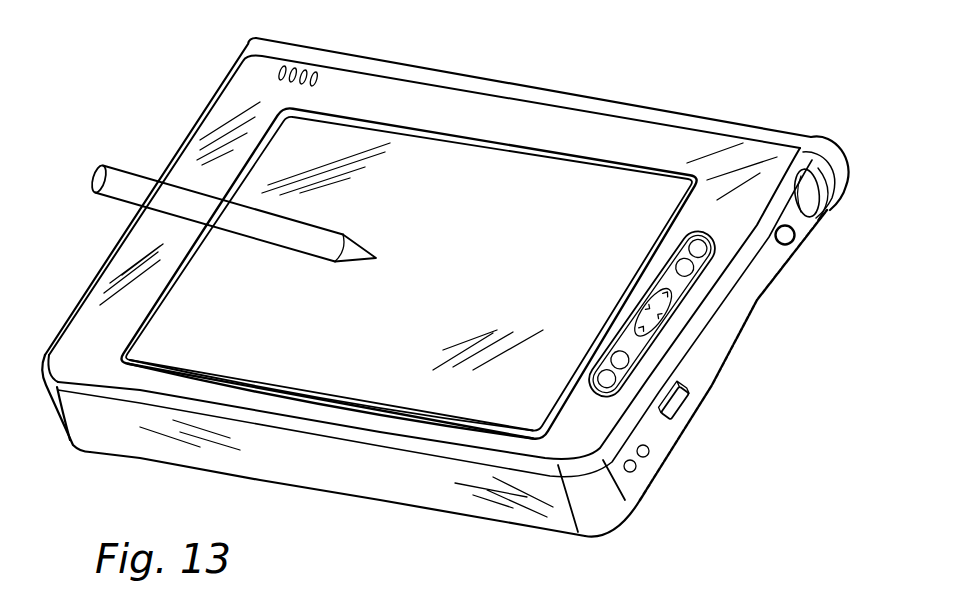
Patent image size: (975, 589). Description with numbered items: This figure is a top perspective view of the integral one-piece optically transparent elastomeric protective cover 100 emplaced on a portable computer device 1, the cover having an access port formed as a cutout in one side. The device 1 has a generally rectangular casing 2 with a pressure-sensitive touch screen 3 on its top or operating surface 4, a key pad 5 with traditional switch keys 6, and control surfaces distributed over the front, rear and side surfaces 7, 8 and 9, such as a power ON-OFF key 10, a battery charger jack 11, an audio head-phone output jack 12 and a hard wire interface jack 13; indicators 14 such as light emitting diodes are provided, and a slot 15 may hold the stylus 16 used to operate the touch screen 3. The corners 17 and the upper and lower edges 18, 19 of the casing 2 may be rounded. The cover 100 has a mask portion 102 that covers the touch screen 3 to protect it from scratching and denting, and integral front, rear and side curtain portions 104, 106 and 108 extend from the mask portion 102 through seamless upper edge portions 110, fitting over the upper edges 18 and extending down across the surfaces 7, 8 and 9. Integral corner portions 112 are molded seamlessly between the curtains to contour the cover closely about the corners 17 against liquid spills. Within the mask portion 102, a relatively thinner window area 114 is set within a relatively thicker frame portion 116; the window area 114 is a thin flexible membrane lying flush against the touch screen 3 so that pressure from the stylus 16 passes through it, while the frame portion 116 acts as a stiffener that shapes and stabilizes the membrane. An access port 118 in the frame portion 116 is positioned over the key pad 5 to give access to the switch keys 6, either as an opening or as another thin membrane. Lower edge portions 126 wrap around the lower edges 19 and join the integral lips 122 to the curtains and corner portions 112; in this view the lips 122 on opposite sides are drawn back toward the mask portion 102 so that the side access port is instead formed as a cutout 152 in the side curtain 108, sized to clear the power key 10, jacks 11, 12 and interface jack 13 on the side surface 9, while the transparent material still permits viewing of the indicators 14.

The portable computer device 1 is at (173, 81).
The casing 2 is at (233, 62).
The touch screen 3 is at (267, 153).
The operating surface 4 is at (92, 332).
The key pad 5 is at (716, 227).
The switch keys 6 is at (718, 312).
The front surface 7 is at (150, 447).
The rear surface 8 is at (640, 100).
The side surface 9 is at (747, 300).
The power ON-OFF key 10 is at (793, 242).
The battery charger jack 11 is at (636, 472).
The audio head-phone output jack 12 is at (648, 457).
The hard wire interface jack 13 is at (675, 408).
The indicators 14 is at (317, 63).
The slot 15 is at (812, 212).
The stylus 16 is at (122, 193).
The corners 17 is at (603, 508).
The upper edges 18 is at (337, 430).
The lower edges 19 is at (113, 455).
The protective cover 100 is at (742, 91).
The mask portion 102 is at (192, 172).
The front curtain portion 104 is at (482, 502).
The rear curtain portion 106 is at (848, 160).
The side curtain portion 108 is at (803, 198).
The upper edge portions 110 is at (413, 67).
The corner portions 112 is at (590, 527).
The window area 114 is at (490, 172).
The frame portion 116 is at (430, 103).
The access port 118 is at (670, 343).
The lips 122 is at (660, 453).
The lower edge portions 126 is at (210, 470).
The cutout 152 is at (682, 370).